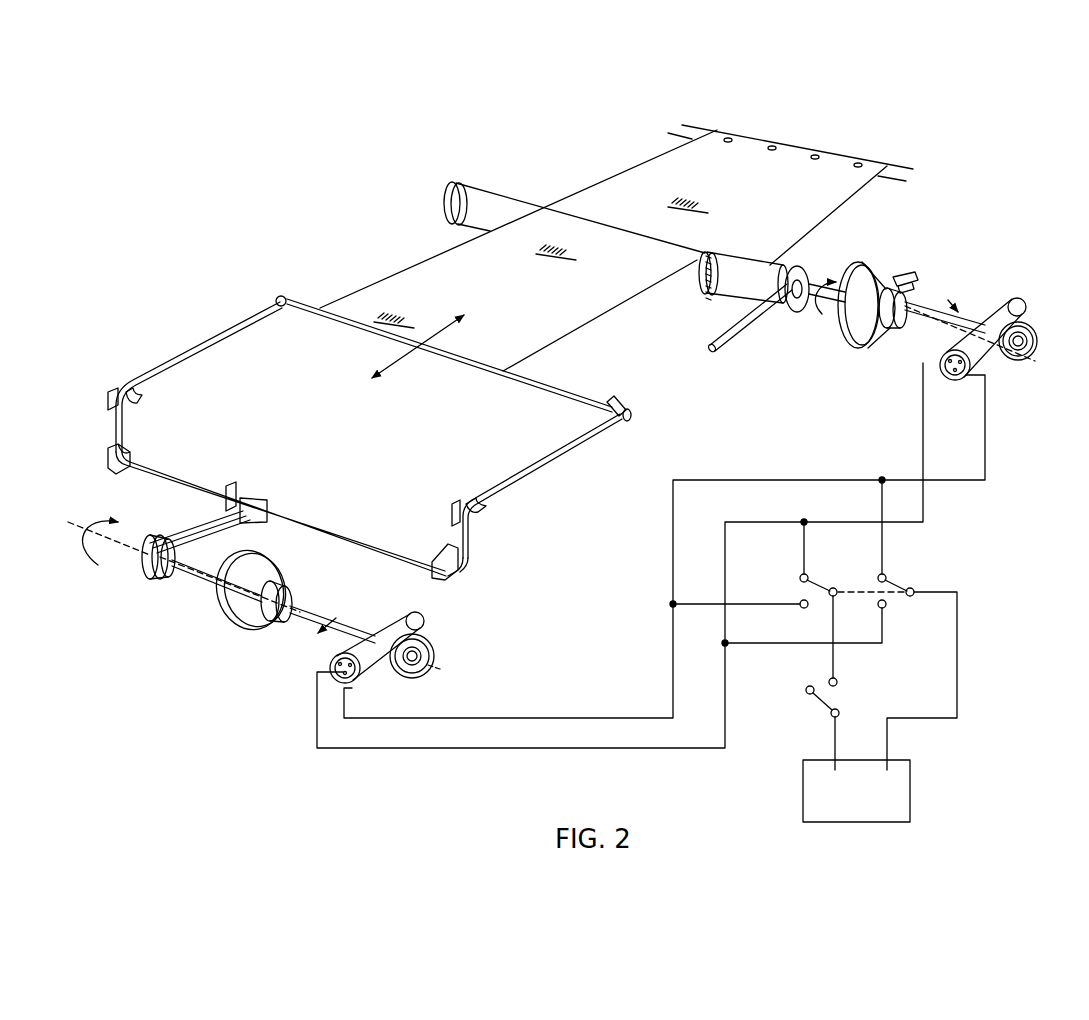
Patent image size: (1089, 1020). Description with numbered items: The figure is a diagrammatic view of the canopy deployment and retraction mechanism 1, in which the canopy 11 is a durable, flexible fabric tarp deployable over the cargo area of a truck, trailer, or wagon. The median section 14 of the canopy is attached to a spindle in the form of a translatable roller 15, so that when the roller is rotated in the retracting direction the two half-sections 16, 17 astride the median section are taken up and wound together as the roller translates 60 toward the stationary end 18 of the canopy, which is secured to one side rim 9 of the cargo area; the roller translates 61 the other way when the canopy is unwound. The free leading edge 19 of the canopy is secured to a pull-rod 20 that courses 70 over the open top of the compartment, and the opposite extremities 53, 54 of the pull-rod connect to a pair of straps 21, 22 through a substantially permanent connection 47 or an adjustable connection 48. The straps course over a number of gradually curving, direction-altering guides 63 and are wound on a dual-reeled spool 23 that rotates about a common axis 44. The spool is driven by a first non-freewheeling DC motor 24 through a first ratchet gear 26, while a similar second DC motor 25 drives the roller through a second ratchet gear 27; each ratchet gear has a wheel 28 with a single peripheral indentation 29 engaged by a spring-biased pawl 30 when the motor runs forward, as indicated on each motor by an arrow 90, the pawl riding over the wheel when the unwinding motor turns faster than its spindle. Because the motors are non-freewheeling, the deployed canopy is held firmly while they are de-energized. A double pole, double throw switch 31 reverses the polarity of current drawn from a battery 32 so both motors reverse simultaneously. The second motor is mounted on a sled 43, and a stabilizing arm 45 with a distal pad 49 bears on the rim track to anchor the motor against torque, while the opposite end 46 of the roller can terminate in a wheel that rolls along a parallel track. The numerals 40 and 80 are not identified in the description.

The canopy deployment and retraction mechanism 1 is at (382, 127).
The side rim 9 is at (700, 124).
The canopy 11 is at (565, 295).
The median section 14 is at (679, 284).
The translatable roller 15 is at (502, 197).
The half-section 16 is at (512, 307).
The half-section 17 is at (636, 177).
The stationary end 18 is at (753, 130).
The free leading edge 19 is at (348, 300).
The pull-rod 20 is at (540, 396).
The strap 21 is at (161, 362).
The strap 22 is at (545, 467).
The dual-reeled spool 23 is at (148, 568).
The first non-freewheeling DC motor 24 is at (378, 668).
The second DC motor 25 is at (988, 362).
The first ratchet gear 26 is at (268, 645).
The second ratchet gear 27 is at (869, 372).
The wheel 28 is at (904, 333).
The peripheral indentation 29 is at (860, 269).
The spring-biased pawl 30 is at (910, 273).
The double pole, double throw switch 31 is at (895, 582).
The battery 32 is at (908, 792).
The guide rail 40 is at (457, 380).
The sled 43 is at (808, 266).
The common axis 44 is at (82, 517).
The stabilizing arm 45 is at (748, 344).
The opposite end of the roller 46 is at (455, 183).
The substantially permanent connection 47 is at (286, 294).
The adjustable connection 48 is at (617, 397).
The distal pad 49 is at (713, 354).
The pull-rod extremity 53 is at (270, 300).
The pull-rod extremity 54 is at (634, 420).
The roller translation (retracting direction) 60 is at (793, 251).
The roller translation (unwinding direction) 61 is at (728, 312).
The curving guide 63 is at (143, 400).
The pull-rod course 70 is at (432, 326).
The rotation arrow 80 is at (823, 316).
The arrow 90 is at (950, 304).